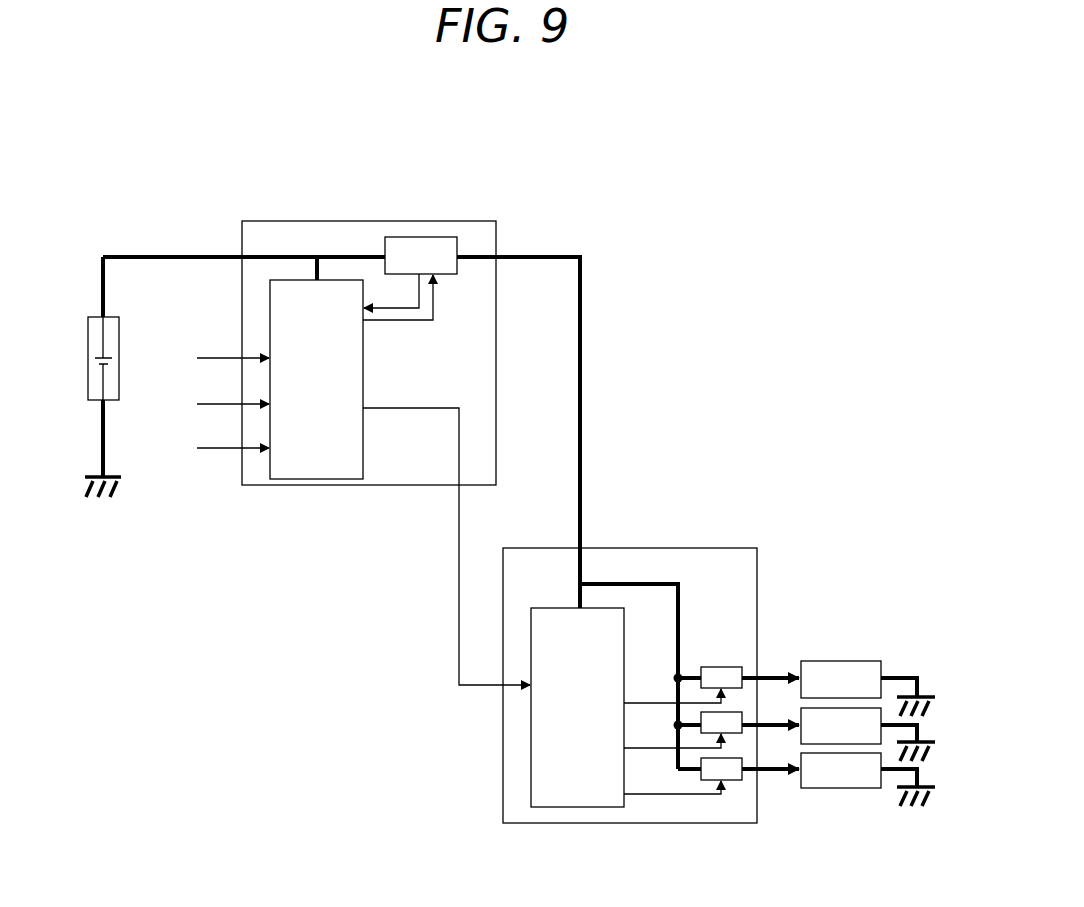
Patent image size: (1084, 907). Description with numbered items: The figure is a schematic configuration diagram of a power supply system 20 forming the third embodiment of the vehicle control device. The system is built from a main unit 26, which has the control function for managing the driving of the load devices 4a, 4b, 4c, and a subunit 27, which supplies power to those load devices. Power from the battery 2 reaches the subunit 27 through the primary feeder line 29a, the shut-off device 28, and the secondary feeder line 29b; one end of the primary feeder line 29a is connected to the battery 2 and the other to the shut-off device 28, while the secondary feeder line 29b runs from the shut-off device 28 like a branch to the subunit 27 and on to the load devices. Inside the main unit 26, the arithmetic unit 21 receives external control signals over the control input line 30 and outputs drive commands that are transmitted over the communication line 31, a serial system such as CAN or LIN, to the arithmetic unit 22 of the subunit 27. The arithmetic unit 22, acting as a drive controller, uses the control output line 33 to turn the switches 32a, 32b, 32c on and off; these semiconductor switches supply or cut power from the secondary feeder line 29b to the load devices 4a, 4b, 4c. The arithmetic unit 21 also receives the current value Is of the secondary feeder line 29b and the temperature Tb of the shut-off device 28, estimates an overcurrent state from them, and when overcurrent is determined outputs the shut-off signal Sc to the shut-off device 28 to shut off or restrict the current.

The battery 2 is at (88, 327).
The power supply system 20 is at (341, 144).
The arithmetic unit 21 is at (270, 322).
The arithmetic unit 22 is at (531, 647).
The main unit 26 is at (367, 222).
The subunit 27 is at (683, 548).
The shut-off device 28 is at (433, 252).
The primary feeder line 29a is at (170, 256).
The secondary feeder line 29b is at (582, 360).
The control input line 30 is at (218, 358).
The communication line 31 is at (459, 568).
The switch 32a is at (717, 667).
The switch 32b is at (730, 722).
The switch 32c is at (735, 775).
The control output line 33 is at (665, 703).
The load device 4a is at (820, 661).
The load device 4b is at (868, 707).
The load device 4c is at (847, 788).